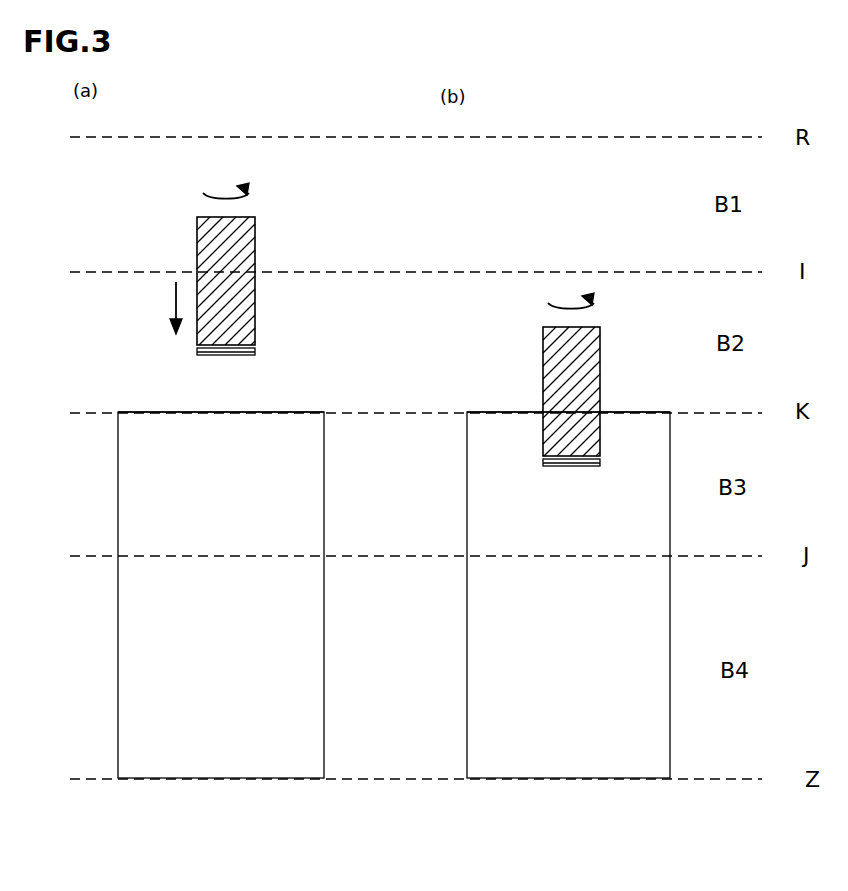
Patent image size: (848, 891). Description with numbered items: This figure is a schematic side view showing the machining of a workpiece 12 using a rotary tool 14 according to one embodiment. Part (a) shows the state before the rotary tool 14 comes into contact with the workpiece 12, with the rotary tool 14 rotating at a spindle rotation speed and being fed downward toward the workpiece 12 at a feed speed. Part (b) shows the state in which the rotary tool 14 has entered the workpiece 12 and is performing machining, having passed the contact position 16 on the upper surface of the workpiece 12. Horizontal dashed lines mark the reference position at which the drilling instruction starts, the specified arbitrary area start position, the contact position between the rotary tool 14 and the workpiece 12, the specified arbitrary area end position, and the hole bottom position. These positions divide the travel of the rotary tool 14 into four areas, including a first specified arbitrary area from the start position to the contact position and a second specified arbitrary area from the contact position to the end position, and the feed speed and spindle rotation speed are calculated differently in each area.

The workpiece 12 is at (467, 753).
The rotary tool 14 is at (543, 358).
The contact position 16 is at (493, 412).